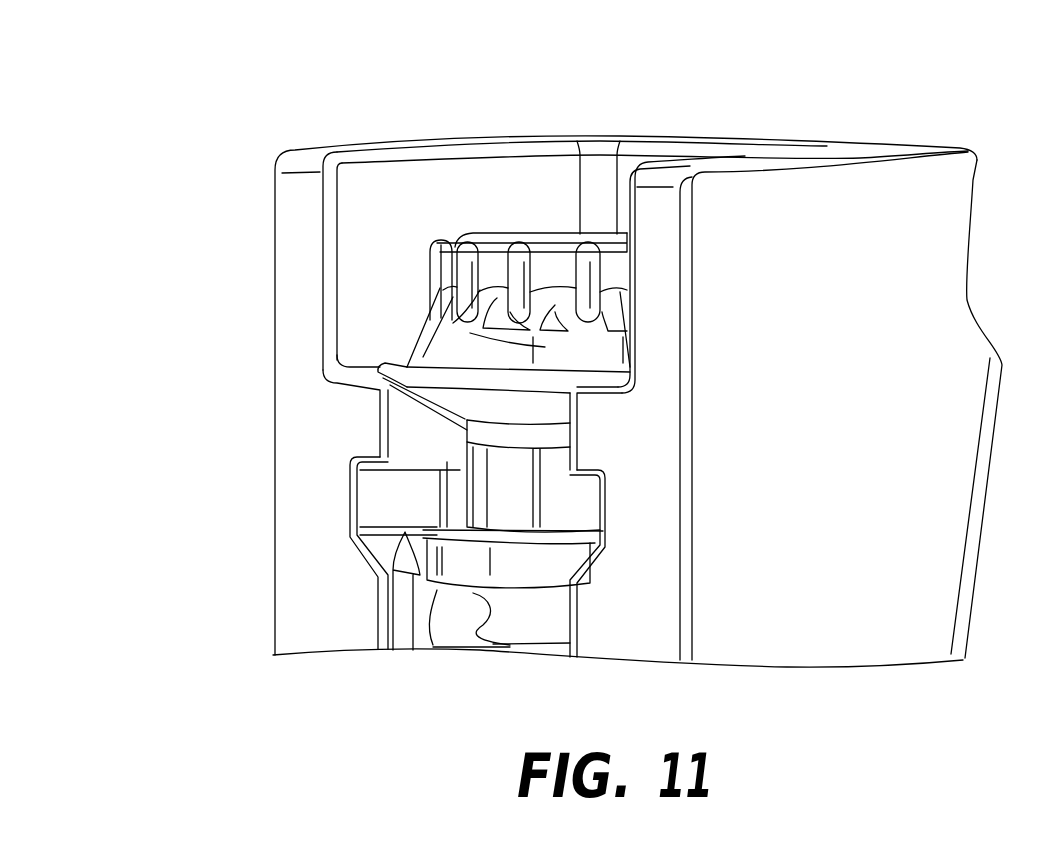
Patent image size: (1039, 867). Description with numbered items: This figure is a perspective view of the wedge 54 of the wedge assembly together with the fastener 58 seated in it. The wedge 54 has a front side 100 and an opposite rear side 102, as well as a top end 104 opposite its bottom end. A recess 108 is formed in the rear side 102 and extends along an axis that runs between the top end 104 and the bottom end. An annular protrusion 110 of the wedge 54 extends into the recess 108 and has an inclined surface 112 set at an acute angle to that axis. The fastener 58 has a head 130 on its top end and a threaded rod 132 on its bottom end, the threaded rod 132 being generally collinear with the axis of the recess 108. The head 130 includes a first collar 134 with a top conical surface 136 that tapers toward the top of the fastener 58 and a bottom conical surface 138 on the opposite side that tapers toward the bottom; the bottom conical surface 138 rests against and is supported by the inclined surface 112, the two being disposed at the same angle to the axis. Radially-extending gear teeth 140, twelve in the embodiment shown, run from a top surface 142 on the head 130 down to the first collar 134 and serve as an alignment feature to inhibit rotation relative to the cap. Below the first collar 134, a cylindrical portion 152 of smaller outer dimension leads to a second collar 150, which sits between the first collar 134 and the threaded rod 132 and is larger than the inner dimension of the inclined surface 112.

The wedge 54 is at (290, 143).
The fastener 58 is at (537, 216).
The front side 100 is at (900, 148).
The rear side 102 is at (275, 255).
The top end 104 is at (810, 140).
The recess 108 is at (440, 648).
The annular protrusion 110 is at (393, 421).
The inclined surface 112 is at (450, 416).
The head 130 is at (421, 237).
The threaded rod 132 is at (472, 650).
The first collar 134 is at (395, 351).
The top conical surface 136 is at (430, 340).
The bottom conical surface 138 is at (455, 410).
The gear teeth 140 is at (465, 333).
The top surface 142 is at (558, 234).
The second collar 150 is at (429, 601).
The cylindrical portion 152 is at (462, 483).